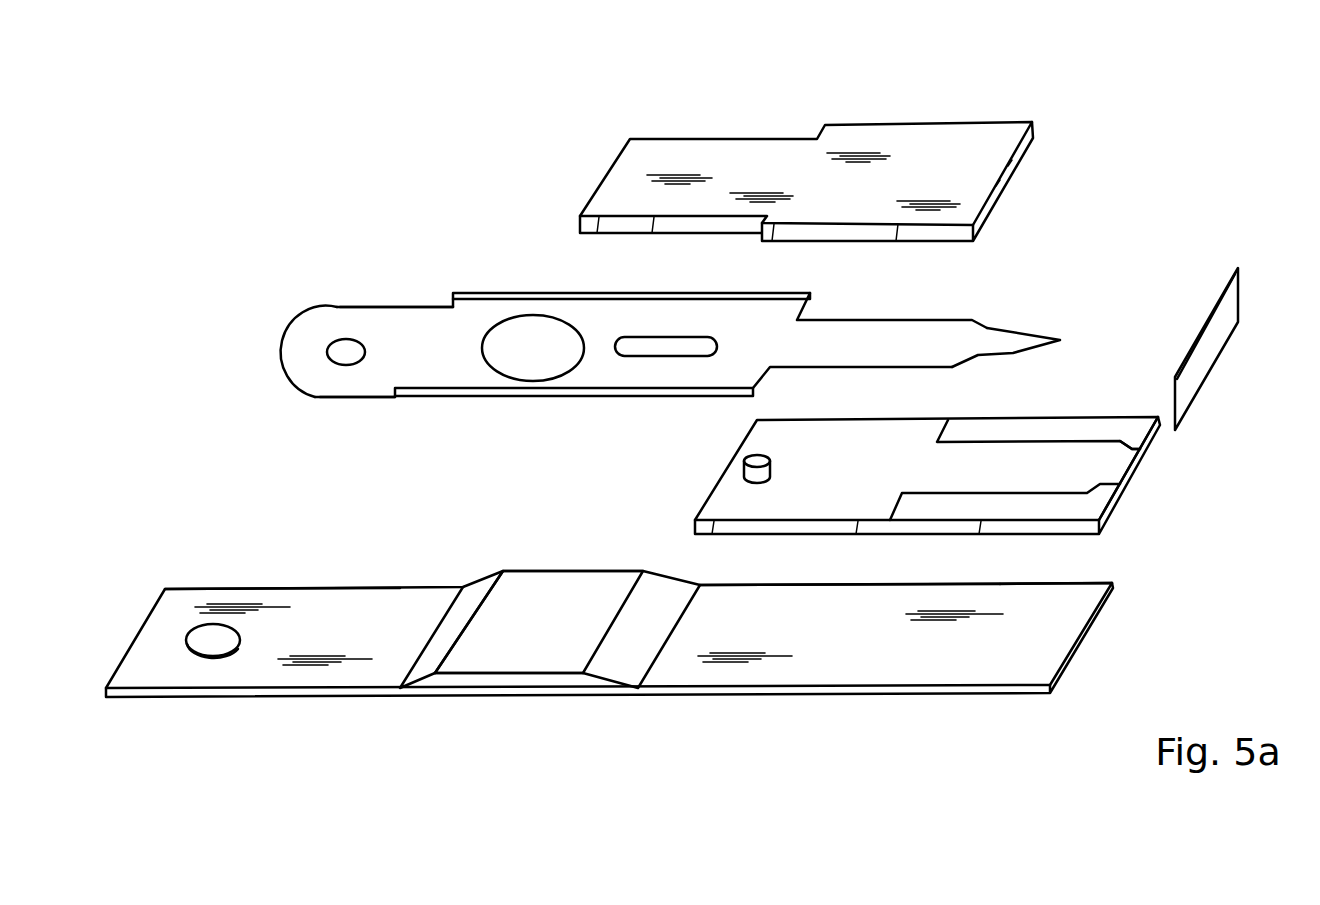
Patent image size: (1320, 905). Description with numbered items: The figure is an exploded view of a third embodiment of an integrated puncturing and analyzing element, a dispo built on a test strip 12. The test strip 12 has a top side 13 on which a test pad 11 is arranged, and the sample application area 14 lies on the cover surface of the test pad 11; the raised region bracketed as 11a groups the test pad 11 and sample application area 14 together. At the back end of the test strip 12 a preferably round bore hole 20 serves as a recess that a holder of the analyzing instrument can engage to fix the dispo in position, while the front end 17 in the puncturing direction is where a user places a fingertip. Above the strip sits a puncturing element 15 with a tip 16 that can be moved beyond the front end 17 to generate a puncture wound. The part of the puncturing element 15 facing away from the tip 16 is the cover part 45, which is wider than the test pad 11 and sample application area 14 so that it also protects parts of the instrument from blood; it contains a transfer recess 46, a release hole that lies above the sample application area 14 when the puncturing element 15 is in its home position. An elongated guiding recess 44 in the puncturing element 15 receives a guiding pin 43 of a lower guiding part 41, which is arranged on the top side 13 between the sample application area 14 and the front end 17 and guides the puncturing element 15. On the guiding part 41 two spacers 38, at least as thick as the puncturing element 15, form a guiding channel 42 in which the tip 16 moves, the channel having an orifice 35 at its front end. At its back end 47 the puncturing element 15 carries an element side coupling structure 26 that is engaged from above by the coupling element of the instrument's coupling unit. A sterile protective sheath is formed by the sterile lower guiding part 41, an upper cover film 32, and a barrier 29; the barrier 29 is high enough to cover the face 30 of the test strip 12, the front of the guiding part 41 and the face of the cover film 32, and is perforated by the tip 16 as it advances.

The test pad 11 is at (563, 678).
The hump region 11a is at (442, 780).
The test strip 12 is at (258, 680).
The top side 13 is at (853, 672).
The sample application area 14 is at (522, 660).
The puncturing element 15 is at (477, 317).
The tip 16 is at (1052, 340).
The front end 17 is at (1018, 665).
The bore hole 20 is at (208, 650).
The element side coupling structure 26 is at (348, 348).
The barrier 29 is at (1212, 345).
The face 30 is at (1099, 615).
The upper cover film 32 is at (860, 137).
The orifice 35 is at (1117, 468).
The spacers 38 is at (1077, 425).
The lower guiding part 41 is at (725, 508).
The guiding channel 42 is at (1095, 450).
The guiding pin 43 is at (745, 455).
The guiding recess 44 is at (648, 347).
The cover part 45 is at (437, 375).
The transfer recess 46 is at (518, 355).
The back end 47 is at (392, 320).